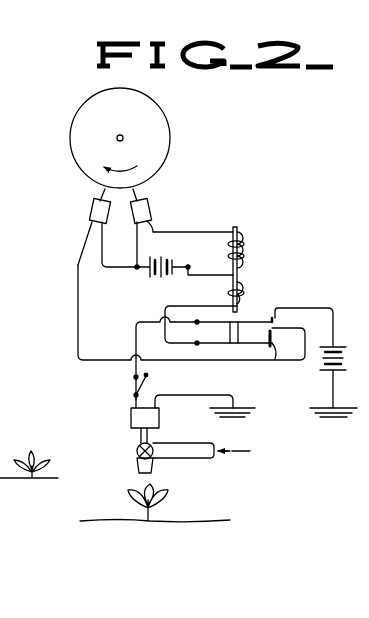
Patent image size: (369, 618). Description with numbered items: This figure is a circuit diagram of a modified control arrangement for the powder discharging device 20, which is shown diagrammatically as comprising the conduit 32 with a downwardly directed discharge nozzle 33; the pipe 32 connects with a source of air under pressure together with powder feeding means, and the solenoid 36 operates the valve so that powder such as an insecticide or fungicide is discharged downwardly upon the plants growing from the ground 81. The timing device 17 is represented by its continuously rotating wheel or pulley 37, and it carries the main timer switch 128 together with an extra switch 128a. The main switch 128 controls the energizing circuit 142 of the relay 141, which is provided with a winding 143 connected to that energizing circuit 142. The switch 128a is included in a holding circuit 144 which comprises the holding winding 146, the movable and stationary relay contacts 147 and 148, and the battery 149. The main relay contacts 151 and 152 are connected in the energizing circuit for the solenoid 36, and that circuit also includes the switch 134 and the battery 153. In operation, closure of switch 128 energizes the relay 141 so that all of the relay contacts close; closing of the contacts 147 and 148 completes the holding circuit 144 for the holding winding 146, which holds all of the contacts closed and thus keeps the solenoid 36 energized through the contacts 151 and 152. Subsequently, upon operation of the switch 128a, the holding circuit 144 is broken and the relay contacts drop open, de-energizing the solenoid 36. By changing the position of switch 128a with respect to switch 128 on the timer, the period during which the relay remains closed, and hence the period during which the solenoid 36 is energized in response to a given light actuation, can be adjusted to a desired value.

The timing device 17 is at (174, 123).
The continuously rotating wheel 37 is at (148, 106).
The timer switch 128 is at (146, 206).
The extra switch 128a is at (92, 210).
The energizing circuit 142 is at (179, 239).
The battery 149 is at (148, 280).
The holding circuit 144 is at (78, 312).
The relay 141 is at (253, 262).
The winding 143 is at (247, 242).
The holding winding 146 is at (247, 288).
The main relay contact 152 is at (268, 317).
The main relay contact 151 is at (280, 317).
The movable relay contact 147 is at (248, 345).
The stationary relay contact 148 is at (278, 346).
The battery 153 is at (316, 368).
The switch 134 is at (132, 383).
The solenoid 36 is at (131, 415).
The device 20 is at (132, 433).
The discharge nozzle 33 is at (137, 462).
The conduit 32 is at (183, 453).
The ground 81 is at (192, 522).